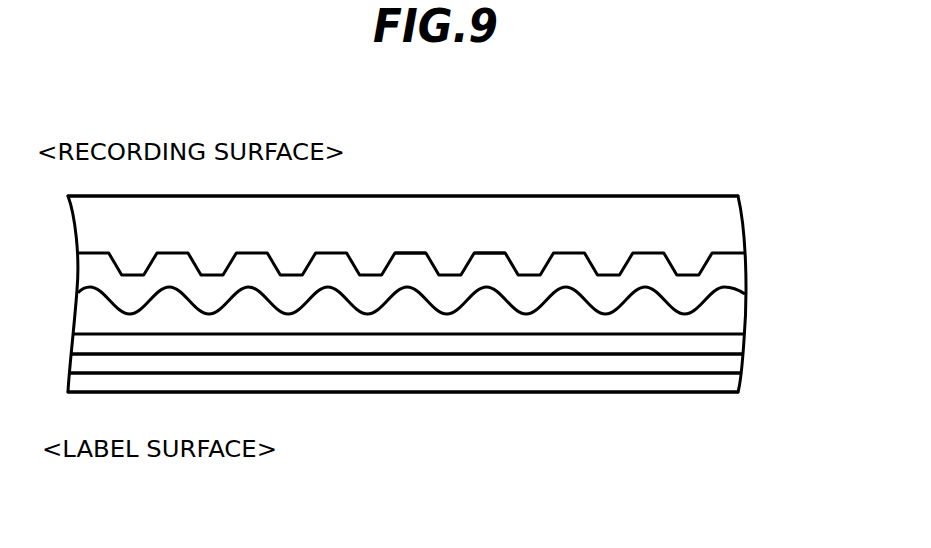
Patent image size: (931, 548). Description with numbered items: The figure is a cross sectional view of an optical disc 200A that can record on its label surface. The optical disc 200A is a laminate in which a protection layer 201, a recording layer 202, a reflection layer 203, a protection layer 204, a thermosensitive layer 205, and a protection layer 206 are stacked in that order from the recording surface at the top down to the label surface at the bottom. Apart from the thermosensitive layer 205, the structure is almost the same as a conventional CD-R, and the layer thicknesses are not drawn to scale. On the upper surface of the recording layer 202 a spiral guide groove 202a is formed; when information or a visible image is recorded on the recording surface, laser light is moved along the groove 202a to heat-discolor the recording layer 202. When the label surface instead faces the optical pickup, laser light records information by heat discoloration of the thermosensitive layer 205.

The optical disc 200A is at (590, 160).
The protection layer 201 is at (733, 224).
The recording layer 202 is at (733, 270).
The groove 202a is at (492, 253).
The reflection layer 203 is at (733, 307).
The protection layer 204 is at (733, 344).
The thermosensitive layer 205 is at (733, 365).
The protection layer 206 is at (738, 390).